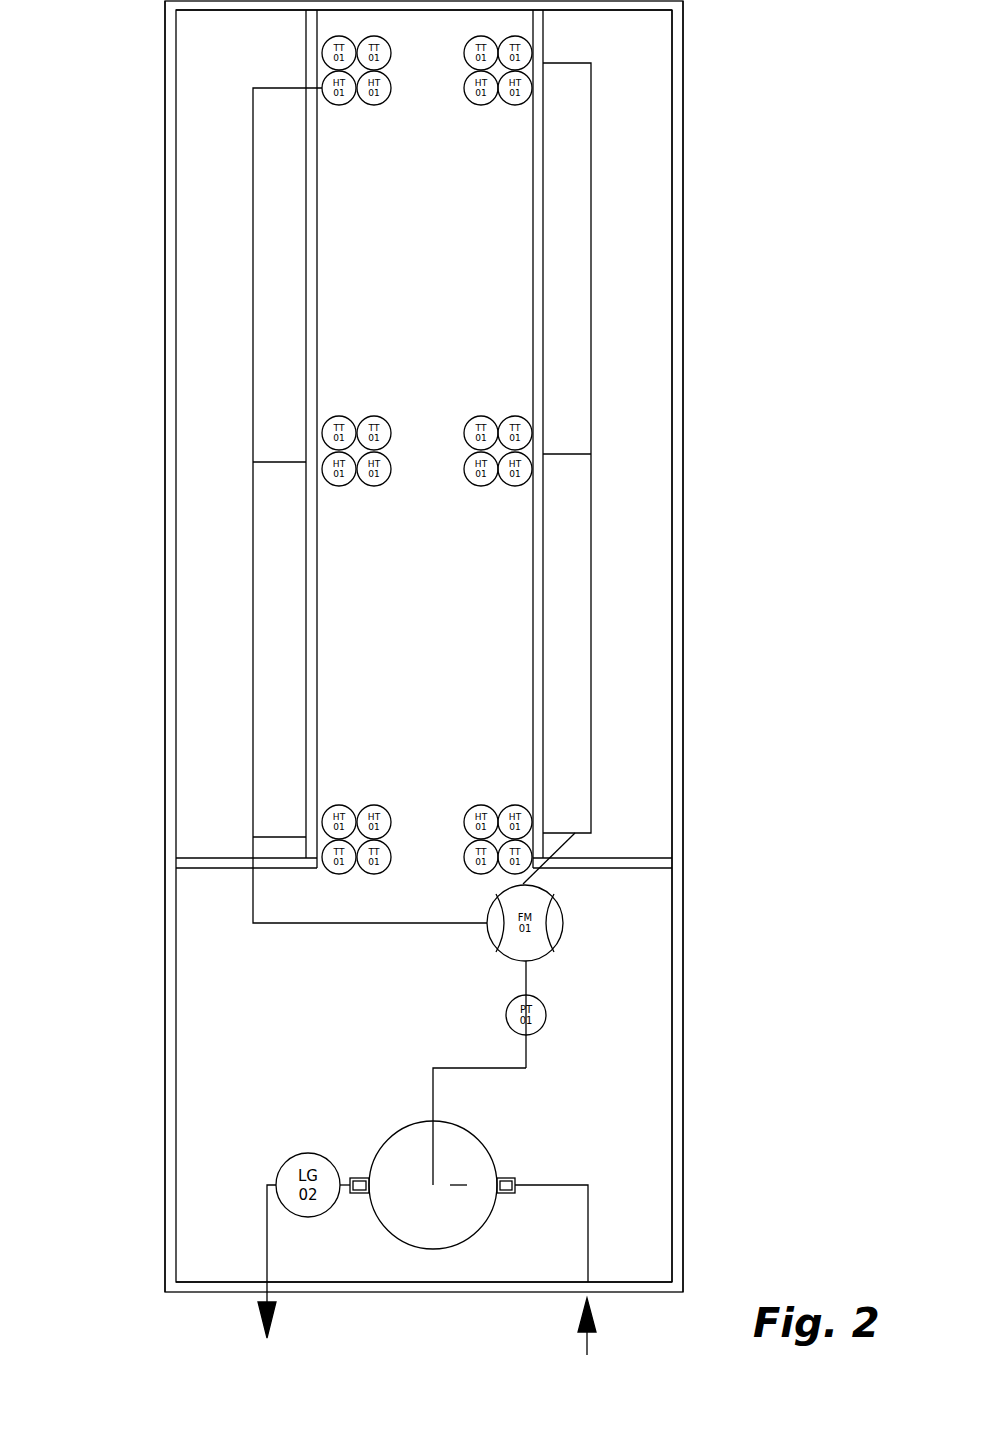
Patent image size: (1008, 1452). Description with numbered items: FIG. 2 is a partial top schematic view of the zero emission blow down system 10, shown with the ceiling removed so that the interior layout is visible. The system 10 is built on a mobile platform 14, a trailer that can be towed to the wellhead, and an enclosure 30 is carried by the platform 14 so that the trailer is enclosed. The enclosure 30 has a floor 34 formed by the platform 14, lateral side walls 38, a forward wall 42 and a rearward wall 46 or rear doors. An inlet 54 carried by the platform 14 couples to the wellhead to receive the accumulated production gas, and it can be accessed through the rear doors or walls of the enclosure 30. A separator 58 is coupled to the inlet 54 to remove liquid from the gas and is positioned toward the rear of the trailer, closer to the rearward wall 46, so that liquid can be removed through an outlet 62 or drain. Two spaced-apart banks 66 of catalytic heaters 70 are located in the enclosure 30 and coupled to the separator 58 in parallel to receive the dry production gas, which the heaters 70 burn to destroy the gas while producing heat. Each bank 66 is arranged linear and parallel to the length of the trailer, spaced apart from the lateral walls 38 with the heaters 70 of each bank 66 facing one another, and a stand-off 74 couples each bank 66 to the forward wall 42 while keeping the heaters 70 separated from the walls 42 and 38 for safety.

The zero emission blow down system 10 is at (757, 1082).
The mobile platform 14 is at (681, 415).
The enclosure 30 is at (165, 130).
The floor 34 is at (200, 1023).
The lateral side walls 38 is at (165, 285).
The forward wall 42 is at (627, 3).
The rearward wall 46 is at (380, 1286).
The inlet 54 is at (597, 1330).
The separator 58 is at (458, 1222).
The outlet 62 is at (262, 1318).
The bank of catalytic heaters 66 is at (312, 553).
The catalytic heaters 70 is at (312, 710).
The stand-off 74 is at (193, 855).